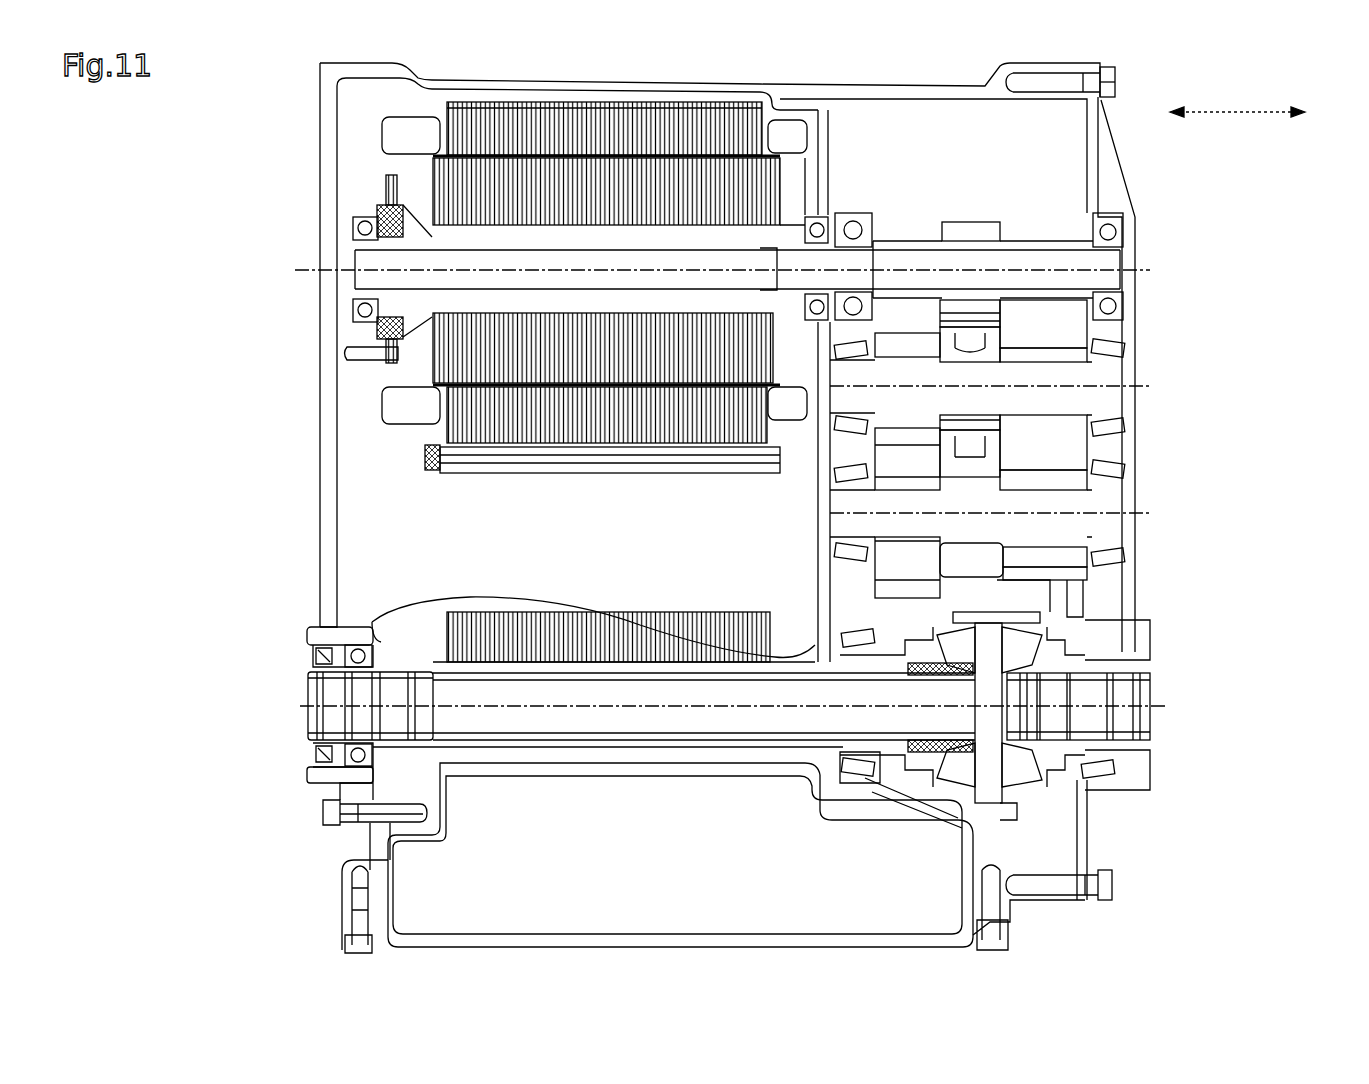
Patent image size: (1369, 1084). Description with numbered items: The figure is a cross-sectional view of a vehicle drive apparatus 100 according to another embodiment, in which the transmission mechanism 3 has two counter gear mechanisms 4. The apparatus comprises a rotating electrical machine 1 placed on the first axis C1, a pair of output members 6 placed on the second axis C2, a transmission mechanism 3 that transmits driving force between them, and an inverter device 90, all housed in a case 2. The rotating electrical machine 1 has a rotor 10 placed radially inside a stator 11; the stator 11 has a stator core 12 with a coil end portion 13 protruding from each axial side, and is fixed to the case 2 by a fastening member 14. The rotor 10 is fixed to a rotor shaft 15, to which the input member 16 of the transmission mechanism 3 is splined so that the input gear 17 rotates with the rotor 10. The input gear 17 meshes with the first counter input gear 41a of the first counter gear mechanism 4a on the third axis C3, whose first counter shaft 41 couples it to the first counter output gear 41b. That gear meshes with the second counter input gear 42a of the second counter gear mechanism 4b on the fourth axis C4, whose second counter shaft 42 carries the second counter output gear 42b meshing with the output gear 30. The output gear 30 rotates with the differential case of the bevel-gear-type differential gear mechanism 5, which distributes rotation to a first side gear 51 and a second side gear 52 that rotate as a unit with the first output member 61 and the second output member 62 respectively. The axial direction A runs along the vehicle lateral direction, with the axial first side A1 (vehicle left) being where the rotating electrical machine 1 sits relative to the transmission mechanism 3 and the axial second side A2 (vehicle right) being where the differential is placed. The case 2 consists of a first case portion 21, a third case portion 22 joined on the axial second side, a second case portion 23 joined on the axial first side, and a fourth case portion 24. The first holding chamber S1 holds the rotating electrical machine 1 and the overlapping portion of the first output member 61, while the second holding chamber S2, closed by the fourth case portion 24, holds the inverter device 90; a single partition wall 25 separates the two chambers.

The vehicle drive apparatus 100 is at (263, 130).
The rotating electrical machine 1 is at (704, 257).
The case 2 is at (731, 501).
The transmission mechanism 3 is at (765, 497).
The counter gear mechanism 4 is at (797, 478).
The first counter gear mechanism 4a is at (1057, 335).
The second counter gear mechanism 4b is at (863, 592).
The differential gear mechanism 5 is at (1015, 716).
The output members 6 is at (760, 746).
The first output member 61 is at (623, 741).
The second output member 62 is at (1095, 778).
The rotor 10 is at (777, 177).
The stator 11 is at (622, 242).
The stator core 12 is at (627, 102).
The coil end portion 13 is at (410, 117).
The fastening member 14 is at (430, 444).
The rotor shaft 15 is at (432, 237).
The input member 16 is at (903, 247).
The input gear 17 is at (962, 227).
The first case portion 21 is at (722, 82).
The third case portion 22 is at (1136, 216).
The second case portion 23 is at (318, 198).
The fourth case portion 24 is at (962, 948).
The partition wall 25 is at (745, 764).
The output gear 30 is at (1050, 857).
The first counter shaft 41 is at (1018, 409).
The first counter input gear 41a is at (962, 462).
The first counter output gear 41b is at (903, 340).
The second counter shaft 42 is at (1028, 562).
The second counter input gear 42a is at (903, 592).
The second counter output gear 42b is at (1063, 468).
The first side gear 51 is at (877, 672).
The second side gear 52 is at (1033, 660).
The inverter device 90 is at (358, 905).
The axial direction A is at (1237, 105).
The axial first side A1 is at (1159, 113).
The axial second side A2 is at (1315, 113).
The first axis C1 is at (742, 271).
The second axis C2 is at (754, 707).
The third axis C3 is at (1010, 387).
The fourth axis C4 is at (1010, 514).
The first holding chamber S1 is at (374, 514).
The second holding chamber S2 is at (388, 858).